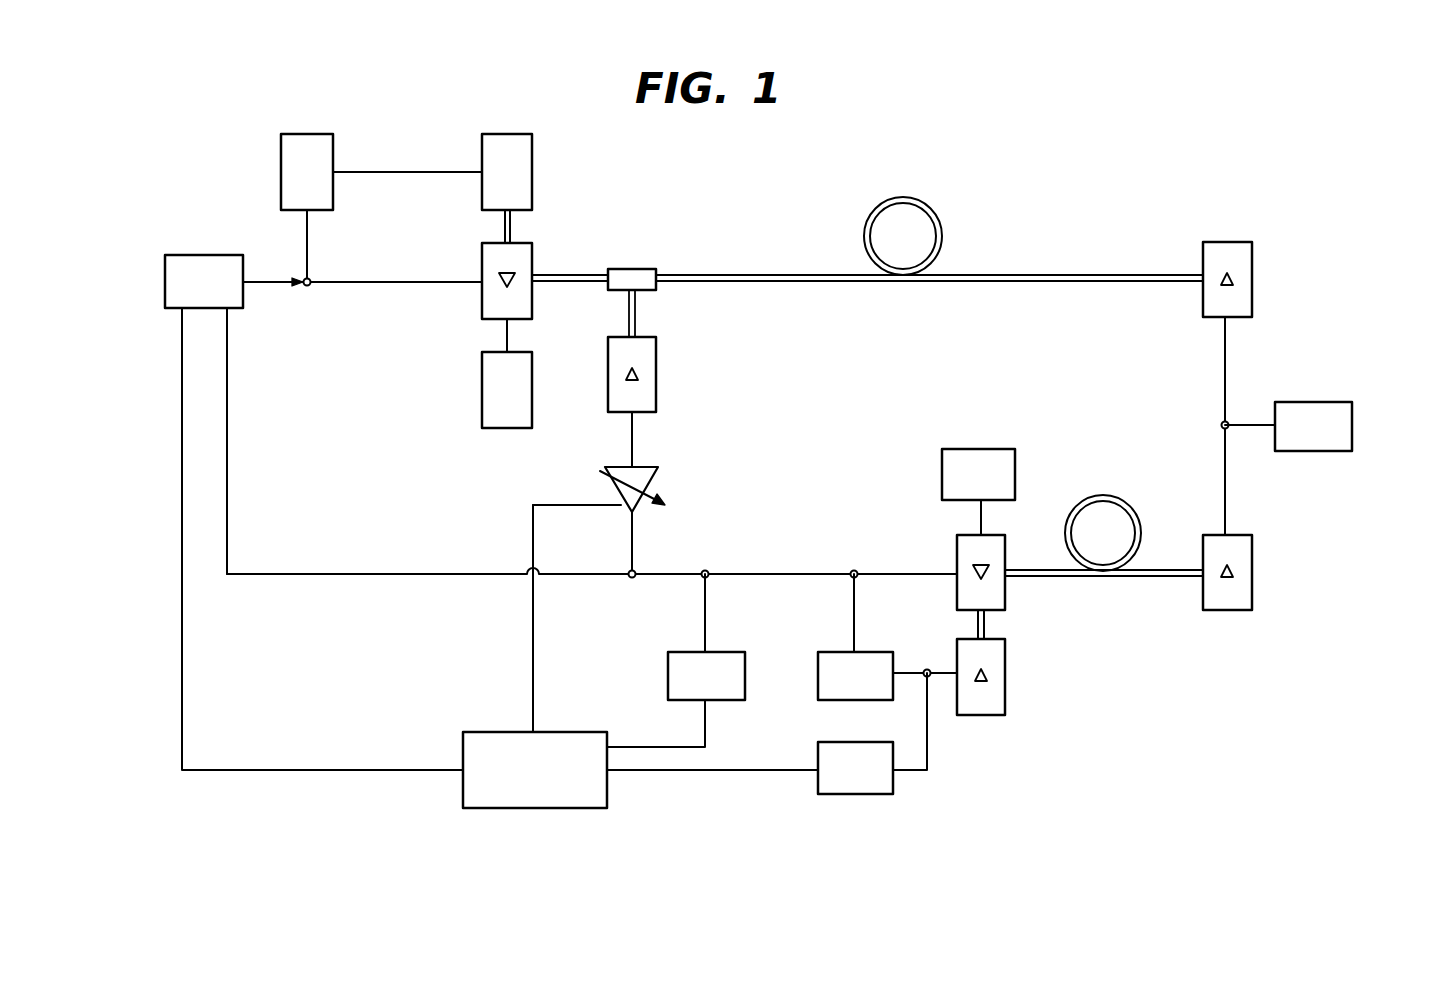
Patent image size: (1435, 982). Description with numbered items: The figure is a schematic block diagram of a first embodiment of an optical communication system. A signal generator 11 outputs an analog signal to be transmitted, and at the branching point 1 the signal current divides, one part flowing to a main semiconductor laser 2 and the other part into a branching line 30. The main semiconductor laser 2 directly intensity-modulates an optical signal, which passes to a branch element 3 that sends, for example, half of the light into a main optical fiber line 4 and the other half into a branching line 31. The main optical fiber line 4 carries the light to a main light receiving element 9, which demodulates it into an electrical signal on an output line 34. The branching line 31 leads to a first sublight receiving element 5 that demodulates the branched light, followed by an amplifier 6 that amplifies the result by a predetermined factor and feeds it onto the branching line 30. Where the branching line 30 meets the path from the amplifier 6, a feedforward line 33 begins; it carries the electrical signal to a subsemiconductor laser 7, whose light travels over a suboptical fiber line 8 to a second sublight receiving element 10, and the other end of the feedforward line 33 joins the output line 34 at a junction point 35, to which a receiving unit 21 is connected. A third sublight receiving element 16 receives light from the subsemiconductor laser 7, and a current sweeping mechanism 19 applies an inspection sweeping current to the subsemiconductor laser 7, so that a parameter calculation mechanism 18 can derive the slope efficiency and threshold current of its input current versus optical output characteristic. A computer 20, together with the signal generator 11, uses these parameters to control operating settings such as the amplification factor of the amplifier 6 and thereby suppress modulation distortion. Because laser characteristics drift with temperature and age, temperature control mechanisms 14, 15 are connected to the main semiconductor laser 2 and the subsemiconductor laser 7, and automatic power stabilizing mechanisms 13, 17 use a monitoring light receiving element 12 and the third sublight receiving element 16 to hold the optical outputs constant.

The branching point 1 is at (307, 286).
The main semiconductor laser 2 is at (532, 252).
The branch element 3 is at (640, 269).
The main optical fiber line 4 is at (911, 197).
The first sublight receiving element 5 is at (656, 353).
The amplifier 6 is at (656, 478).
The subsemiconductor laser 7 is at (1005, 604).
The suboptical fiber line 8 is at (1100, 495).
The main light receiving element 9 is at (1228, 242).
The second sublight receiving element 10 is at (1252, 546).
The signal generator 11 is at (232, 256).
The light receiving element 12 is at (562, 145).
The automatic power stabilizing mechanism 13 is at (358, 142).
The temperature control mechanism 14 is at (482, 368).
The temperature control mechanism 15 is at (997, 449).
The third sublight receiving element 16 is at (1005, 700).
The automatic power stabilizing mechanism 17 is at (885, 652).
The parameter calculation mechanism 18 is at (878, 794).
The current sweeping mechanism 19 is at (668, 690).
The computer 20 is at (591, 808).
The receiving unit 21 is at (1338, 402).
The branching line 30 is at (227, 464).
The branching line 31 is at (636, 314).
The feedforward line 33 is at (680, 574).
The output line 34 is at (1225, 364).
The junction point 35 is at (1222, 428).